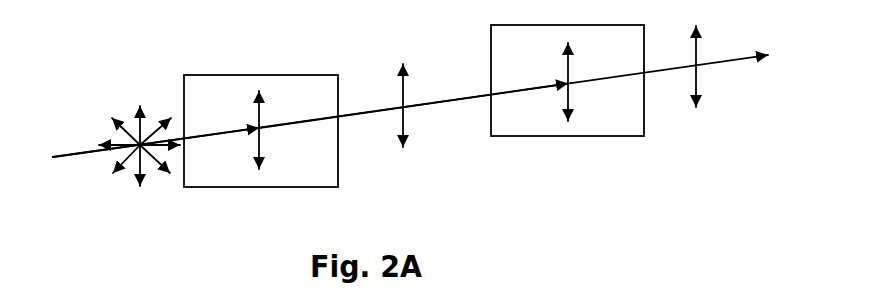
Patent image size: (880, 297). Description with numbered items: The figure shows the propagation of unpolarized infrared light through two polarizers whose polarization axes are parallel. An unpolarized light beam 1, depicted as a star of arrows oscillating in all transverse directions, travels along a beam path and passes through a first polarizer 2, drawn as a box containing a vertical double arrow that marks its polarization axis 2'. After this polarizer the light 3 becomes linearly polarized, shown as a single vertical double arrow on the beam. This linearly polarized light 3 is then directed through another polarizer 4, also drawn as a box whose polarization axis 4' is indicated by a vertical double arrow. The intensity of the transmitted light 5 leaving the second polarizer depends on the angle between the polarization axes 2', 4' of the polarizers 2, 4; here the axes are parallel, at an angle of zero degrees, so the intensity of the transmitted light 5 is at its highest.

The unpolarized light beam 1 is at (72, 157).
The polarizer 2 is at (261, 168).
The polarization axis of polarizer 2' is at (293, 130).
The linearly polarized light 3 is at (338, 118).
The polarizer 4 is at (567, 116).
The polarization axis of polarizer 4' is at (602, 82).
The transmitted light 5 is at (737, 63).